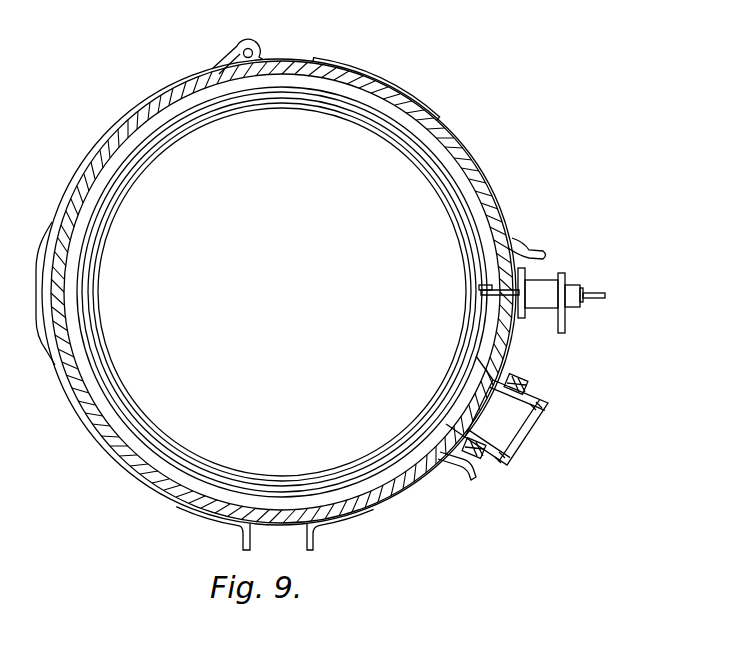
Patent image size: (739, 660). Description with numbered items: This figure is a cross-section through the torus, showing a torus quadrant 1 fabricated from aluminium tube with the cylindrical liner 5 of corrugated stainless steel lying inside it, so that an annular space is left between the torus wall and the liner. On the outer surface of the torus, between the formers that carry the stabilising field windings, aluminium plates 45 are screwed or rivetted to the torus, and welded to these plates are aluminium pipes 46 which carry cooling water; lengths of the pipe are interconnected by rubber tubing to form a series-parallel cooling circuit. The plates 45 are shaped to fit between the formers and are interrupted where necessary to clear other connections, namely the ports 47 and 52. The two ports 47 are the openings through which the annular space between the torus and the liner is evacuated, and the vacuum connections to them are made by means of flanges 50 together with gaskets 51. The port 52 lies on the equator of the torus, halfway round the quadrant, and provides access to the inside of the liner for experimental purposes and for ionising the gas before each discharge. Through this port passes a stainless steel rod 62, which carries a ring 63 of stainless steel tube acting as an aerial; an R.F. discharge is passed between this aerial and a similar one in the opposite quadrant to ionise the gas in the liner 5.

The torus quadrant 1 is at (434, 118).
The cylindrical liner 5 is at (462, 208).
The aluminium plates 45 is at (307, 61).
The aluminium pipes 46 is at (241, 43).
The ports 47 is at (482, 402).
The flanges 50 is at (538, 371).
The gaskets 51 is at (468, 458).
The ports 52 is at (541, 290).
The stainless steel rod 62 is at (481, 291).
The ring 63 is at (471, 336).